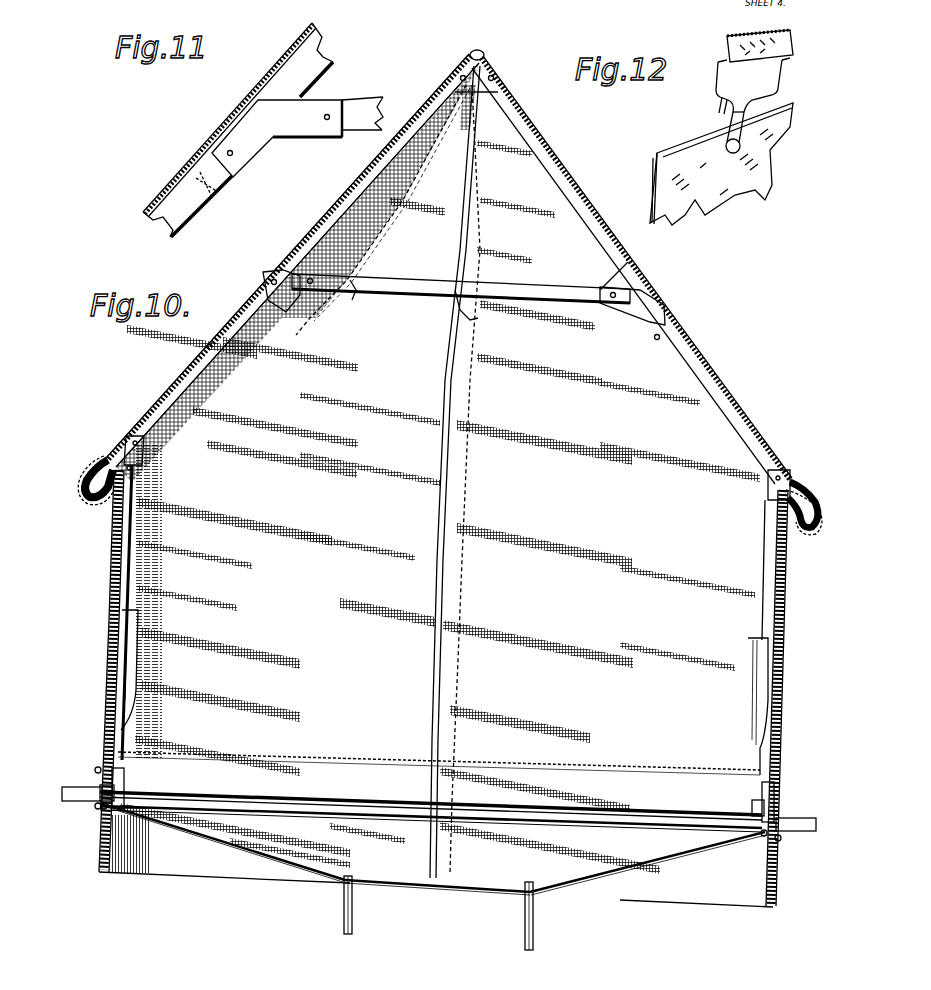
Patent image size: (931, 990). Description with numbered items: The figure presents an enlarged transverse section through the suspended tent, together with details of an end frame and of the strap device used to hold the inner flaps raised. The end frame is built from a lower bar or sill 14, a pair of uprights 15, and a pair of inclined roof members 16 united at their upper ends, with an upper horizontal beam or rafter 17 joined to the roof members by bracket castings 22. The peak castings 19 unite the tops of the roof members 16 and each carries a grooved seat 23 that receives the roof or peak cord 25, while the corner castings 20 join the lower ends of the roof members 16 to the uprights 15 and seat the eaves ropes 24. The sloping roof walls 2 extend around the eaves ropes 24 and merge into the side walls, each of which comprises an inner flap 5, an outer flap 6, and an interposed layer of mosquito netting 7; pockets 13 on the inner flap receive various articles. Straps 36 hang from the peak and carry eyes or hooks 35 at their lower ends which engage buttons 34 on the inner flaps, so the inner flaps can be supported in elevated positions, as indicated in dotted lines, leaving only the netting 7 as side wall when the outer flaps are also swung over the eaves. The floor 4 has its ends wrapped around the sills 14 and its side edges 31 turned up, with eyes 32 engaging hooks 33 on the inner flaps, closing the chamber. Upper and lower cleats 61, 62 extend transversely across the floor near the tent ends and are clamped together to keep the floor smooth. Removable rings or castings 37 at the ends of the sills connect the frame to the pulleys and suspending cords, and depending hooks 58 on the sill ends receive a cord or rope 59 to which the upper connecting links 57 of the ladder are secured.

In FIG. 10, the sloping roof walls 2 is at (438, 96).
In FIG. 10, the floor 4 is at (415, 810).
In FIG. 11, the inner flap 5 is at (209, 188).
In FIG. 10, the inner flap 5 is at (778, 860).
In FIG. 11, the outer flap 6 is at (158, 196).
In FIG. 10, the outer flap 6 is at (170, 393).
In FIG. 10, the layer of mosquito netting 7 is at (122, 608).
In FIG. 10, the pockets 13 is at (140, 660).
In FIG. 10, the lower bar or sill 14 is at (76, 786).
In FIG. 10, the uprights 15 is at (125, 563).
In FIG. 11, the inclined roof members 16 is at (190, 224).
In FIG. 10, the inclined roof members 16 is at (200, 372).
In FIG. 11, the upper horizontal beam or rafter 17 is at (362, 118).
In FIG. 10, the upper horizontal beam or rafter 17 is at (628, 262).
In FIG. 10, the castings 19 is at (493, 90).
In FIG. 10, the castings 20 is at (146, 460).
In FIG. 11, the bracket castings 22 is at (272, 136).
In FIG. 10, the bracket castings 22 is at (296, 300).
In FIG. 10, the grooved seat 23 is at (484, 70).
In FIG. 10, the eaves ropes 24 is at (92, 478).
In FIG. 10, the roof or peak cord 25 is at (482, 53).
In FIG. 10, the side edges of the floor 31 is at (126, 775).
In FIG. 10, the eyes 32 is at (126, 790).
In FIG. 10, the hooks 33 is at (132, 760).
In FIG. 12, the buttons 34 is at (733, 150).
In FIG. 12, the eyes or hooks 35 is at (770, 107).
In FIG. 10, the eyes or hooks 35 is at (358, 292).
In FIG. 12, the straps 36 is at (785, 44).
In FIG. 10, the straps 36 is at (372, 262).
In FIG. 10, the removable rings or castings 37 is at (98, 800).
In FIG. 10, the connecting links 57 is at (353, 920).
In FIG. 10, the depending hooks 58 is at (118, 820).
In FIG. 10, the cord or rope 59 is at (630, 872).
In FIG. 10, the upper cleat 61 is at (615, 810).
In FIG. 10, the lower cleat 62 is at (628, 822).